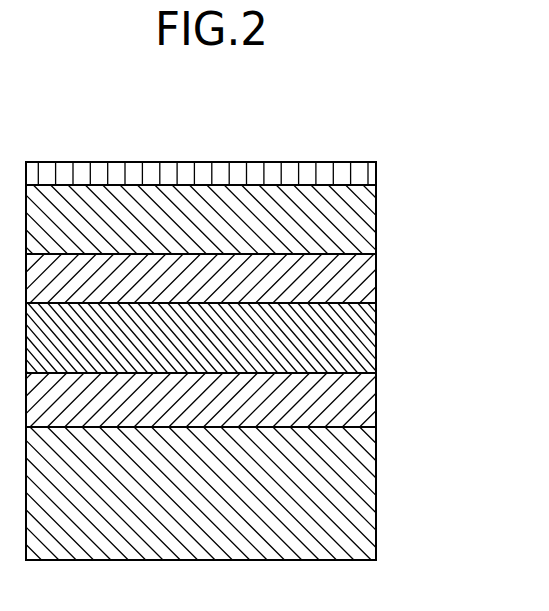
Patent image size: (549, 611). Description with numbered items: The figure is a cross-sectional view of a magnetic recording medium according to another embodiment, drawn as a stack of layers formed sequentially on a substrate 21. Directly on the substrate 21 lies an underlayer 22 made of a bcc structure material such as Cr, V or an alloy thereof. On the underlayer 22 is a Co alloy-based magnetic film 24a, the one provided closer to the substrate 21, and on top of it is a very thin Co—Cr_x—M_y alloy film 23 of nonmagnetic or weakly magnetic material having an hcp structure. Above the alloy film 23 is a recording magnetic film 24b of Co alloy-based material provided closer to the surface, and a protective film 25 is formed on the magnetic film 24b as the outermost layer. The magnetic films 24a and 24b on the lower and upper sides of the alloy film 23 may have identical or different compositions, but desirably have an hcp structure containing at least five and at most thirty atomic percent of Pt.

The substrate 21 is at (368, 491).
The underlayer 22 is at (368, 403).
The Co—Cr_x—M_y alloy film 23 is at (368, 279).
The magnetic film 24a is at (368, 339).
The recording magnetic film 24b is at (368, 229).
The protective film 25 is at (368, 176).